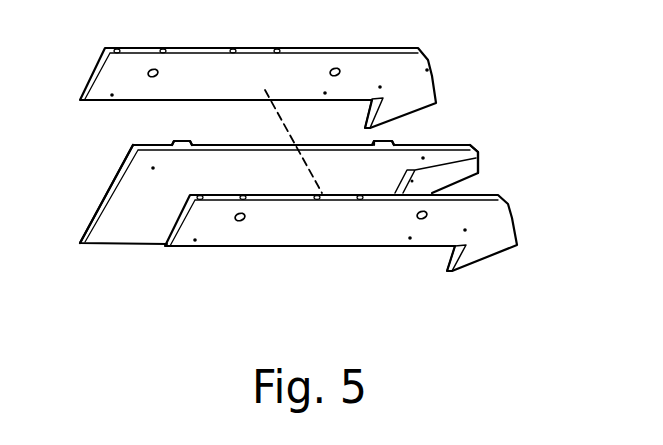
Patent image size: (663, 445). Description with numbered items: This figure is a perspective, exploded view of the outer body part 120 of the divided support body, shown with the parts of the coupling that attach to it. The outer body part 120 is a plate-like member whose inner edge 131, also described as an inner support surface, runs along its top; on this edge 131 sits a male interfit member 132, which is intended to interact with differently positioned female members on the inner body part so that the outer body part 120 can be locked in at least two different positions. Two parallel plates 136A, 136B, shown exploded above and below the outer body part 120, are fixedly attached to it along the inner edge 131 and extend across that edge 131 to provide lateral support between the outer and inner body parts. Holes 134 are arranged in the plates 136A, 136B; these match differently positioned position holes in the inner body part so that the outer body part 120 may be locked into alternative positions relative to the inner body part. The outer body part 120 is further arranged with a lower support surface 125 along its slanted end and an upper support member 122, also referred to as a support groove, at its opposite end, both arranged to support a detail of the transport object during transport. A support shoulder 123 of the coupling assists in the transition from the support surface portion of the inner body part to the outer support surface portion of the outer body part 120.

The outer body part 120 is at (120, 210).
The upper support member 122 is at (480, 163).
The support shoulder 123 is at (437, 76).
The lower support surface 125 is at (120, 170).
The inner edge 131 is at (261, 144).
The male interfit member 132 is at (184, 142).
The holes 134 is at (331, 71).
The plate 136A is at (292, 70).
The plate 136B is at (307, 232).